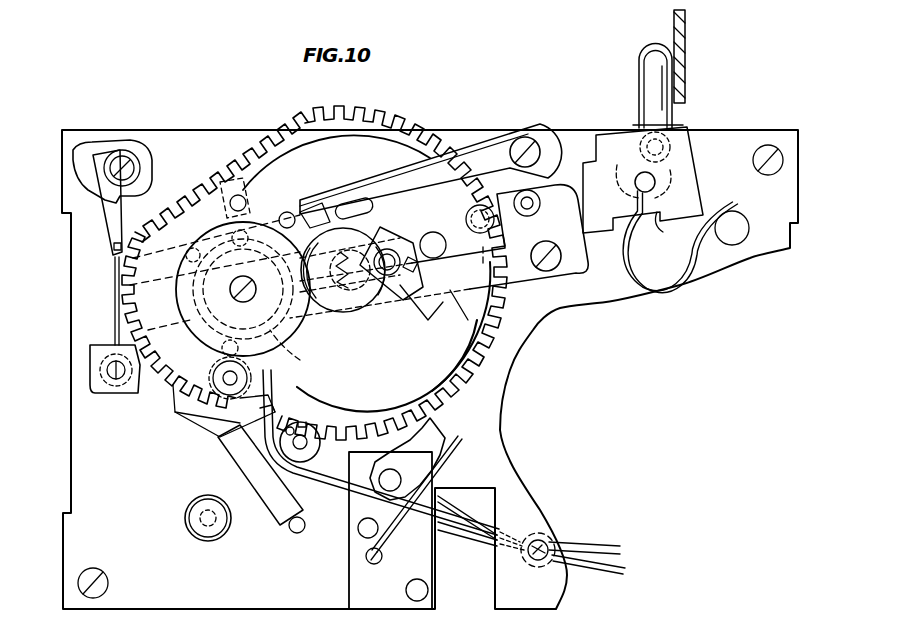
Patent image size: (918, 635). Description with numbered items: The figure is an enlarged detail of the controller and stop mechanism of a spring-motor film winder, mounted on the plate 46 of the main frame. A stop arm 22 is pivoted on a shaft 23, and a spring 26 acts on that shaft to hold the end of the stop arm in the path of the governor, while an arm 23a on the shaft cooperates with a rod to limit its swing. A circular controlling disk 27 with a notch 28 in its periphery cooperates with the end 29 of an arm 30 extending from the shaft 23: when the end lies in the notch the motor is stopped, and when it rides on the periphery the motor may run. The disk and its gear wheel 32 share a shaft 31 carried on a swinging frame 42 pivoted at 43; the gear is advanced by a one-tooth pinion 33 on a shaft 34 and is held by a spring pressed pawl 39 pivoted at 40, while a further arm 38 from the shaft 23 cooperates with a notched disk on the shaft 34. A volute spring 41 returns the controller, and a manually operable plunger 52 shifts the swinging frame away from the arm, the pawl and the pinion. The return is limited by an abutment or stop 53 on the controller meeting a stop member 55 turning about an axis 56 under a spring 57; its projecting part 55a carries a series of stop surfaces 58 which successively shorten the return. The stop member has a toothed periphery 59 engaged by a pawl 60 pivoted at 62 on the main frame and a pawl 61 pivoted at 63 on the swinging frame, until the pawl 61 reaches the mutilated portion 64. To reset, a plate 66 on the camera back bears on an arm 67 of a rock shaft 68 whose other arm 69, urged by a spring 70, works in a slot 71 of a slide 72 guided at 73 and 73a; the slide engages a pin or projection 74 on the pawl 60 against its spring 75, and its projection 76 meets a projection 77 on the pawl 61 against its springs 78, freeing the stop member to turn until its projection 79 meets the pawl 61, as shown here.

The stop arm 22 is at (478, 495).
The shaft 23 is at (548, 546).
The arm 23a is at (618, 548).
The spring 26 is at (610, 568).
The controlling disk 27 is at (470, 375).
The notch 28 is at (332, 343).
The end of arm 29 is at (253, 437).
The arm 30 is at (345, 492).
The shaft 31 is at (352, 305).
The gear wheel 32 is at (488, 348).
The one-tooth pinion 33 is at (312, 440).
The shaft 34 is at (293, 473).
The arm 38 is at (448, 532).
The spring pressed pawl 39 is at (452, 462).
The pivot 40 is at (410, 520).
The volute spring 41 is at (372, 303).
The swinging frame 42 is at (575, 272).
The pivot 43 is at (530, 200).
The plate 46 is at (620, 305).
The manually operable plunger 52 is at (212, 532).
The abutment or stop 53 is at (268, 212).
The stop member 55 is at (200, 203).
The projecting part 55a is at (205, 412).
The axis 56 is at (243, 276).
The spring 57 is at (183, 340).
The stop surfaces 58 is at (240, 423).
The toothed periphery 59 is at (175, 223).
The pawl 60 is at (110, 200).
The pawl 61 is at (415, 255).
The pivot 62 is at (123, 160).
The pivot 63 is at (386, 248).
The mutilated portion 64 is at (332, 370).
The plate 66 is at (686, 50).
The arm 67 is at (652, 56).
The rock shaft 68 is at (665, 145).
The arm 69 is at (665, 165).
The spring 70 is at (700, 262).
The slot 71 is at (660, 220).
The slide 72 is at (608, 150).
The guide 73 is at (408, 282).
The guide 73a is at (318, 208).
The pin or projection 74 is at (118, 245).
The spring 75 is at (113, 312).
The projection 76 is at (440, 252).
The projection 77 is at (459, 308).
The springs 78 is at (421, 309).
The projection 79 is at (365, 225).